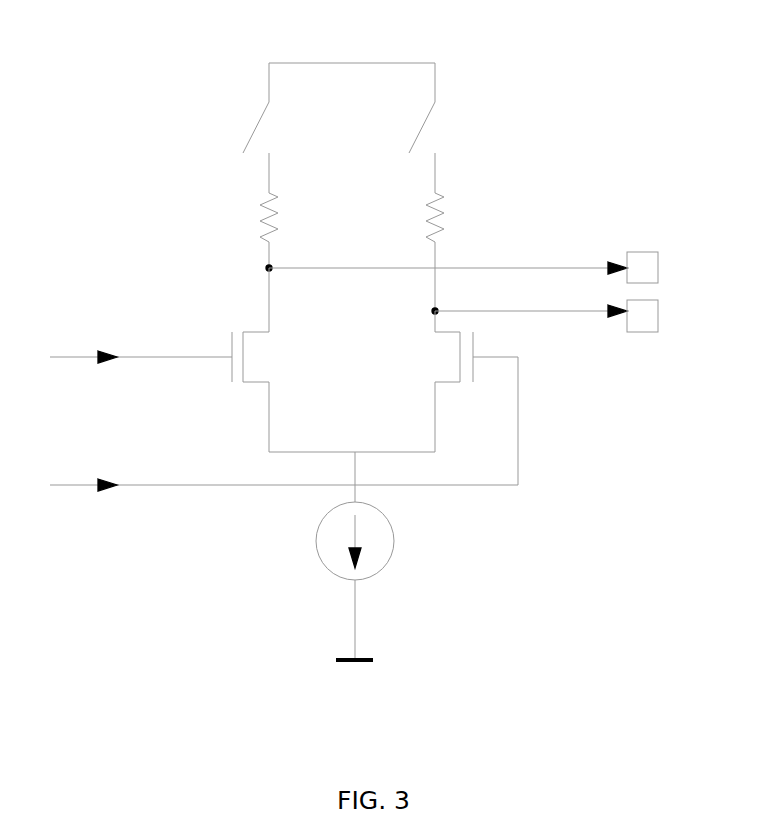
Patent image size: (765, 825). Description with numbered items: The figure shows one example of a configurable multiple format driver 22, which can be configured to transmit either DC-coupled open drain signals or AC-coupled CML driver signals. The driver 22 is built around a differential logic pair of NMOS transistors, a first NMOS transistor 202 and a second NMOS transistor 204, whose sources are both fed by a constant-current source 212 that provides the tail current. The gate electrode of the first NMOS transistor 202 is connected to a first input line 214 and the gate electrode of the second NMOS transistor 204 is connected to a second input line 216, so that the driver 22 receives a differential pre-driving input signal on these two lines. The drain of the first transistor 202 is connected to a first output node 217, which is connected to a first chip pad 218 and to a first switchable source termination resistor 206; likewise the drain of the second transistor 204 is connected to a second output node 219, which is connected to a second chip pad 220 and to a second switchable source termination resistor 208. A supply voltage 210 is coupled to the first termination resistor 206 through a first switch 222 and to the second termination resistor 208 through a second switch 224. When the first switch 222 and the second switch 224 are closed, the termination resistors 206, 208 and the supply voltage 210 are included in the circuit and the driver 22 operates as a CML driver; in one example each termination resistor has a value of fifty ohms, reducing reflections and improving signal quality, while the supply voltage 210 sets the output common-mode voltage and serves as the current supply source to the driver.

The configurable multiple format driver 22 is at (162, 92).
The supply voltage 210 is at (352, 66).
The switch 222 is at (302, 147).
The switch 224 is at (475, 147).
The switchable source termination resistor 206 is at (320, 230).
The switchable source termination resistor 208 is at (483, 252).
The output node 217 is at (269, 268).
The output node 219 is at (435, 311).
The chip pad 218 is at (493, 267).
The chip pad 220 is at (576, 316).
The NMOS transistor 202 is at (276, 360).
The NMOS transistor 204 is at (428, 381).
The input line 214 is at (118, 357).
The input line 216 is at (261, 428).
The current source 212 is at (382, 581).